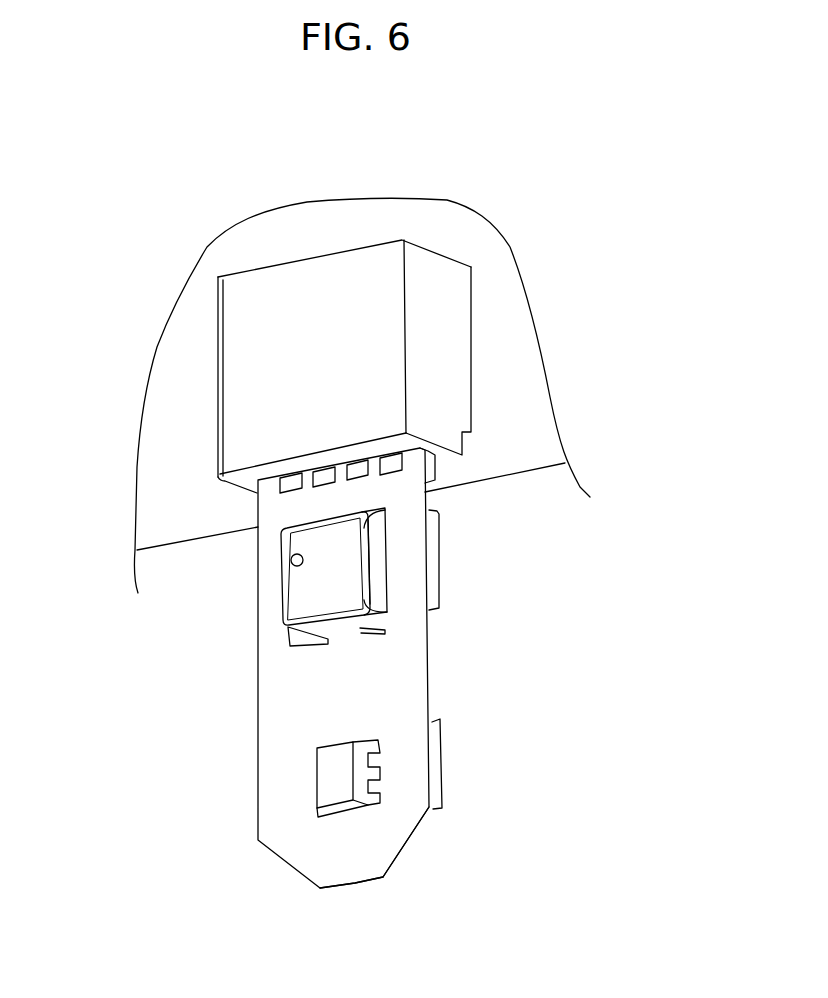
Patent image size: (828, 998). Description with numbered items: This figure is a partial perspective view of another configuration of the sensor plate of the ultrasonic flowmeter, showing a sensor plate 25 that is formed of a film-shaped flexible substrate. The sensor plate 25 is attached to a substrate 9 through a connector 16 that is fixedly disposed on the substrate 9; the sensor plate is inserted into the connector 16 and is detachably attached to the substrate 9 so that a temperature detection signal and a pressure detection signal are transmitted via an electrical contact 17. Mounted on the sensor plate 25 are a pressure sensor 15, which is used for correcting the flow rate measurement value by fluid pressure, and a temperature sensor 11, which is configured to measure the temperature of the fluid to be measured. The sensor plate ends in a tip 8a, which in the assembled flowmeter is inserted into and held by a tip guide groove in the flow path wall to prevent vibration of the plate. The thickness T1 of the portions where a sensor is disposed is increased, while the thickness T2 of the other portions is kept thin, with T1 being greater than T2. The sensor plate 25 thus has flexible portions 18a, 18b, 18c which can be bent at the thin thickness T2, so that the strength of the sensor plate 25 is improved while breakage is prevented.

The substrate 9 is at (168, 416).
The connector 16 is at (253, 433).
The electrical contact 17 is at (258, 492).
The pressure sensor 15 is at (323, 568).
The sensor plate 25 is at (310, 683).
The temperature sensor 11 is at (337, 771).
The flexible portion 18a is at (428, 487).
The flexible portion 18b is at (430, 700).
The flexible portion 18c is at (412, 840).
The tip 8a is at (355, 883).
The thickness T1 is at (400, 582).
The thickness T2 is at (398, 654).